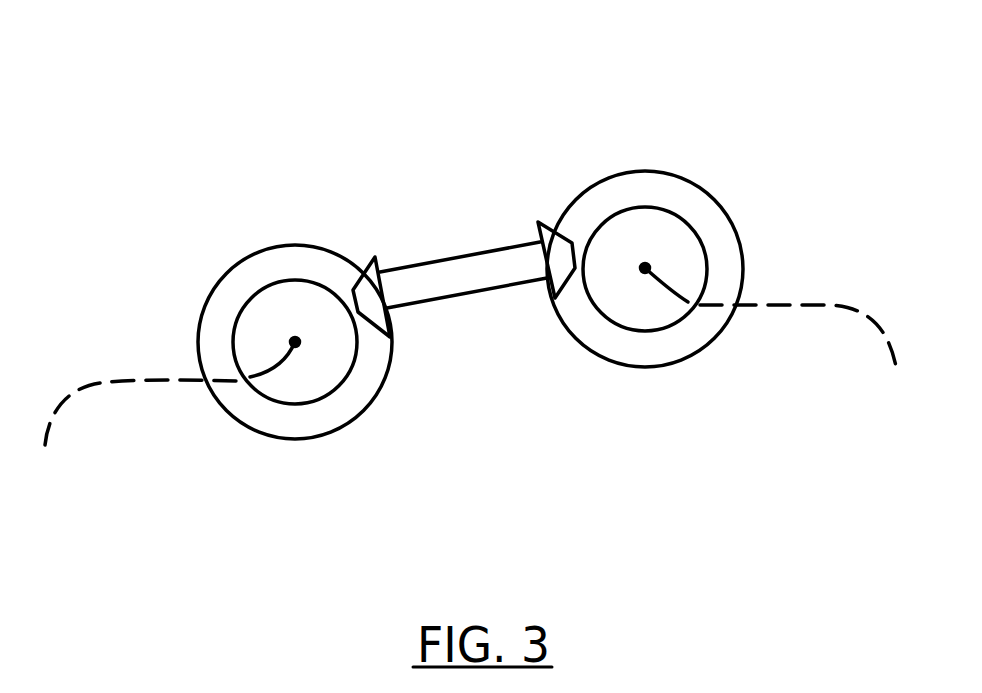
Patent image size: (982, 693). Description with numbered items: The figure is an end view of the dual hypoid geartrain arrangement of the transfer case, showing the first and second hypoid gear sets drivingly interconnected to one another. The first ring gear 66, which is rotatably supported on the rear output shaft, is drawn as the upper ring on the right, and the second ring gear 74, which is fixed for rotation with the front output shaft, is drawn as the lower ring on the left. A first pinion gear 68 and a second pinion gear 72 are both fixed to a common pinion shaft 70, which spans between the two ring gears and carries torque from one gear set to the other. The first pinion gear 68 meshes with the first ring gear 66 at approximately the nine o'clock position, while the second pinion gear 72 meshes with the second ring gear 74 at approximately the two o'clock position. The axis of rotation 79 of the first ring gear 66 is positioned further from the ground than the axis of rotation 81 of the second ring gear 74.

The first ring gear 66 is at (713, 220).
The first pinion gear 68 is at (543, 227).
The pinion shaft 70 is at (455, 270).
The second pinion gear 72 is at (368, 273).
The second ring gear 74 is at (213, 320).
The axis of rotation 79 is at (807, 361).
The axis of rotation 81 is at (134, 435).